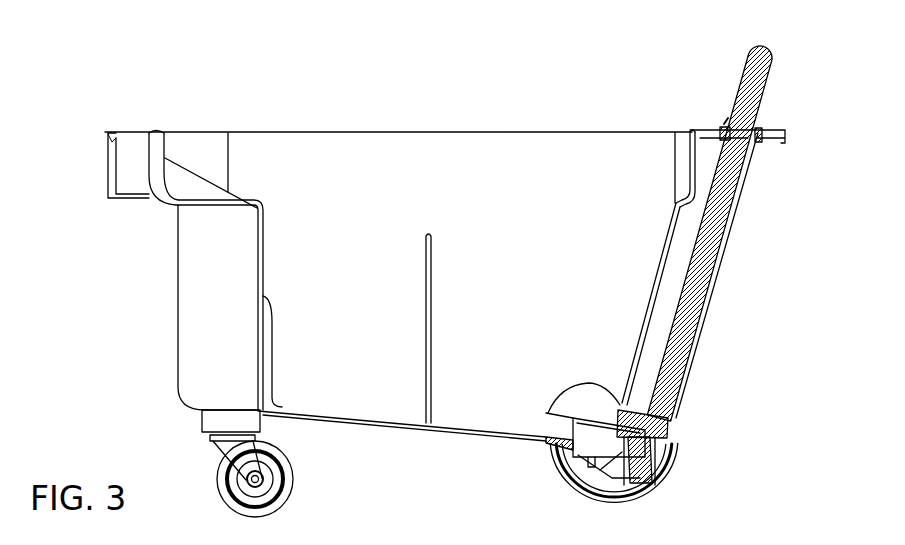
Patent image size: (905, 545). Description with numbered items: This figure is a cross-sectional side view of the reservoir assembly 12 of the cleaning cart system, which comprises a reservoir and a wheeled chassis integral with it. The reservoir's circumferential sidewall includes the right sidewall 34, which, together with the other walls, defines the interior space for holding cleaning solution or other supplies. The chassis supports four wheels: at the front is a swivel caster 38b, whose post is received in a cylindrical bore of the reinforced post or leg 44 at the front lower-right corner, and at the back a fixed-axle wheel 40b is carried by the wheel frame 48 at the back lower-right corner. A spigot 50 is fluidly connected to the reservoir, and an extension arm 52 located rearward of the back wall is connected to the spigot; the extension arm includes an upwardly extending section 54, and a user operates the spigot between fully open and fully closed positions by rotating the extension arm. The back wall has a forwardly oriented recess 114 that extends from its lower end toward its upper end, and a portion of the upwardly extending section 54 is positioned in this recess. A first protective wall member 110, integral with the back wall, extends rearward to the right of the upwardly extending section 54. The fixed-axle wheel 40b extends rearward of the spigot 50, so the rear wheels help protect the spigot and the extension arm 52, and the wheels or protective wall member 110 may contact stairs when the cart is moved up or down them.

The reservoir assembly 12 is at (209, 68).
The right sidewall 34 is at (517, 191).
The swivel caster 38b is at (223, 495).
The fixed-axle wheel 40b is at (680, 457).
The reinforced post or leg 44 is at (200, 420).
The wheel frame 48 is at (660, 470).
The spigot 50 is at (642, 396).
The extension arm 52 is at (728, 88).
The upwardly extending section 54 is at (740, 173).
The first protective wall member 110 is at (733, 223).
The forwardly oriented recess 114 is at (657, 320).